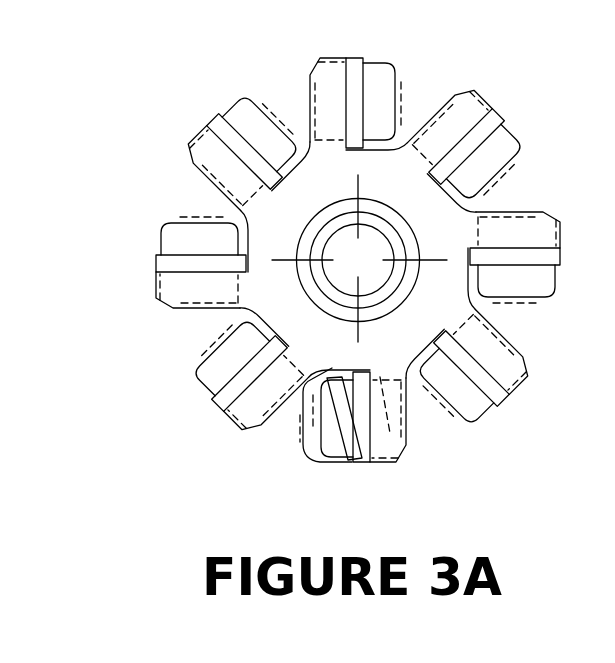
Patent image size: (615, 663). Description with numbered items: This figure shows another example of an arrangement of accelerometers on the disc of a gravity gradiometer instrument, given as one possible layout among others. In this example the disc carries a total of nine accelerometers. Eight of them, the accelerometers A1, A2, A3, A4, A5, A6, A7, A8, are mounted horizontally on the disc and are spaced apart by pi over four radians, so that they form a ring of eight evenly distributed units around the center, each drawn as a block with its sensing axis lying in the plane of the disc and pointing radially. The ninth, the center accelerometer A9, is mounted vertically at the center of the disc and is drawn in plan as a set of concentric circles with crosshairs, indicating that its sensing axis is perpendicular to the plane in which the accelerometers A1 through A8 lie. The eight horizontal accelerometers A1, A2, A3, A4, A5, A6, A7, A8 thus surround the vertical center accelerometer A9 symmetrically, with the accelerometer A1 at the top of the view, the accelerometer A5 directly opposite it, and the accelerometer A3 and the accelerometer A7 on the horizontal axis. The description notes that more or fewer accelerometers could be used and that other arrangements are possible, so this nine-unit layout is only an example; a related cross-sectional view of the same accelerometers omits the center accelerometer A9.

The accelerometer A1 is at (371, 84).
The accelerometer A2 is at (474, 145).
The accelerometer A3 is at (537, 261).
The accelerometer A4 is at (468, 371).
The accelerometer A5 is at (353, 438).
The accelerometer A6 is at (242, 370).
The accelerometer A7 is at (171, 260).
The accelerometer A8 is at (247, 149).
The center accelerometer A9 is at (359, 258).